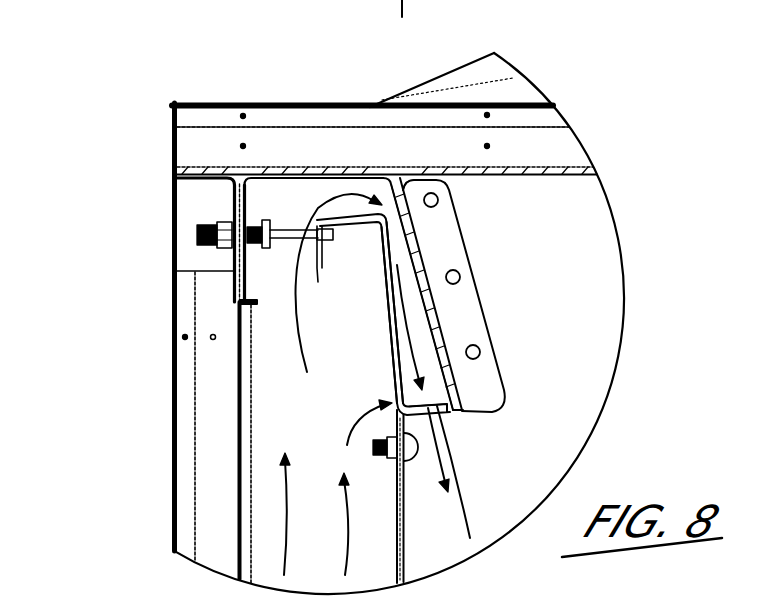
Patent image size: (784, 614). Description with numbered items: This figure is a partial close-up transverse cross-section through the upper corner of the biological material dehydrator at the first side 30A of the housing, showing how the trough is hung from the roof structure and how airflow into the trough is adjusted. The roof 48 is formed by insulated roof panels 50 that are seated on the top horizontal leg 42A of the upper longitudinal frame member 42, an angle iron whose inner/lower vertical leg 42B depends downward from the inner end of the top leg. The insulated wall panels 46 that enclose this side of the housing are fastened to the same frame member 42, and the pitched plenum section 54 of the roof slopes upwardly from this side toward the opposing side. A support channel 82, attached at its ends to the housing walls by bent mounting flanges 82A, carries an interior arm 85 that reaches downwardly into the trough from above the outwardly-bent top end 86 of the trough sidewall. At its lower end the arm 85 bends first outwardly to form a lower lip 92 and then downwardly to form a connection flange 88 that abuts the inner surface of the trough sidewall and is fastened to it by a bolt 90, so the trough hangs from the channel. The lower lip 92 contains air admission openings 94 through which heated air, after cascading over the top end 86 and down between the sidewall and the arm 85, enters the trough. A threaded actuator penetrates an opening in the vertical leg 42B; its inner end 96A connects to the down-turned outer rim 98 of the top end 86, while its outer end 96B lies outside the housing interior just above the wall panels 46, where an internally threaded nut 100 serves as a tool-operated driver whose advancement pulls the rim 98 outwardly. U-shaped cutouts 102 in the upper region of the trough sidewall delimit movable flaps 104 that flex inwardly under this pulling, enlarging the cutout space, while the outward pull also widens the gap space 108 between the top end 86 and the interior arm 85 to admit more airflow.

The first side of the housing 30A is at (132, 441).
The upper longitudinal frame member 42 is at (227, 252).
The top horizontal leg 42A is at (173, 185).
The inner/lower vertical leg 42B is at (232, 262).
The insulated wall panel 46 is at (197, 383).
The roof 48 is at (272, 90).
The insulated roof panel 50 is at (318, 120).
The pitched plenum section 54 is at (466, 82).
The support channel 82 is at (466, 295).
The bent mounting flange 82A is at (451, 223).
The interior arm 85 is at (413, 260).
The outwardly-bent top end 86 is at (361, 224).
The connection flange 88 is at (403, 464).
The bolt 90 is at (373, 451).
The lower lip 92 is at (445, 423).
The air admission opening 94 is at (420, 405).
The inner end of threaded actuator 96A is at (332, 242).
The upper bolt 96B is at (197, 234).
The down-turned outer rim 98 is at (320, 270).
The internally threaded nut 100 is at (225, 247).
The U-shaped cutout 102 is at (397, 413).
The movable flap 104 is at (405, 402).
The gap space 108 is at (400, 200).